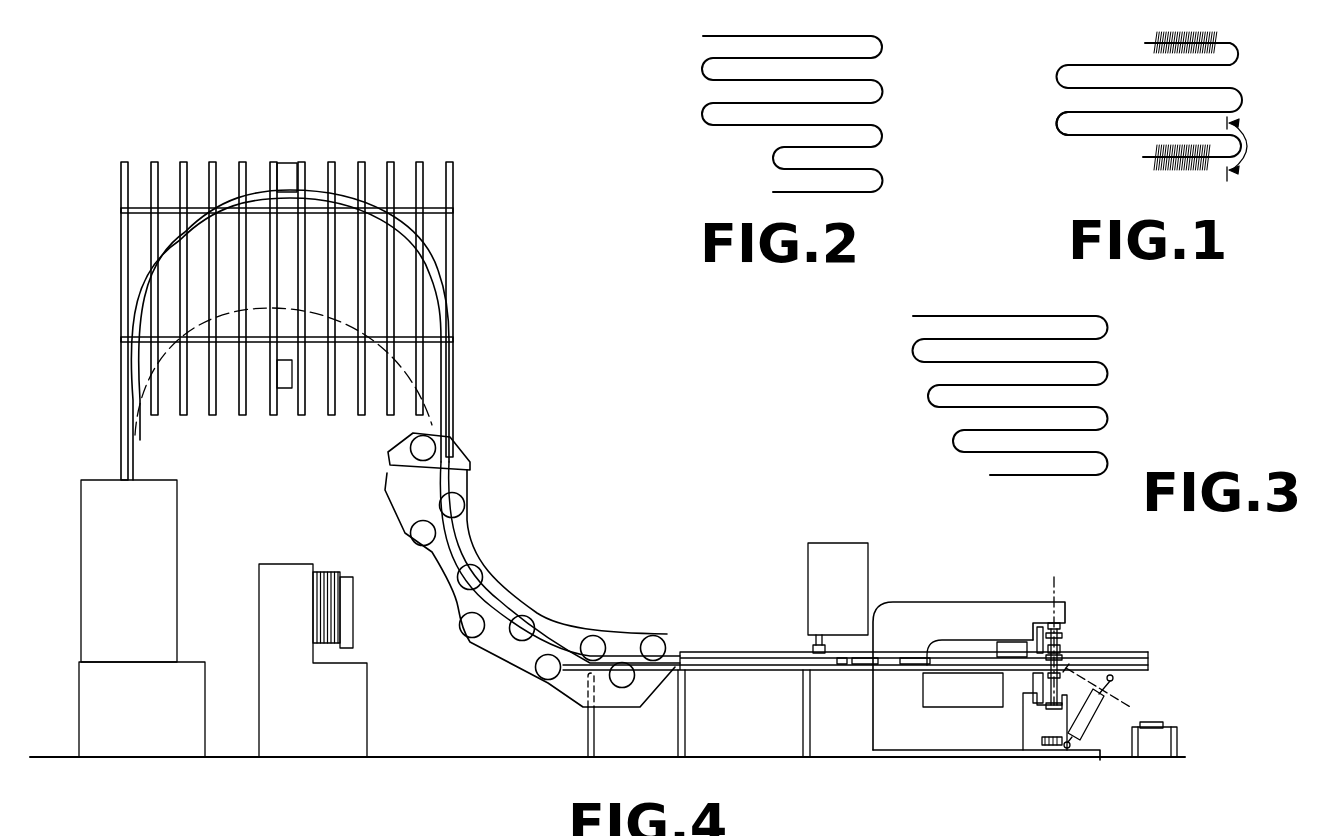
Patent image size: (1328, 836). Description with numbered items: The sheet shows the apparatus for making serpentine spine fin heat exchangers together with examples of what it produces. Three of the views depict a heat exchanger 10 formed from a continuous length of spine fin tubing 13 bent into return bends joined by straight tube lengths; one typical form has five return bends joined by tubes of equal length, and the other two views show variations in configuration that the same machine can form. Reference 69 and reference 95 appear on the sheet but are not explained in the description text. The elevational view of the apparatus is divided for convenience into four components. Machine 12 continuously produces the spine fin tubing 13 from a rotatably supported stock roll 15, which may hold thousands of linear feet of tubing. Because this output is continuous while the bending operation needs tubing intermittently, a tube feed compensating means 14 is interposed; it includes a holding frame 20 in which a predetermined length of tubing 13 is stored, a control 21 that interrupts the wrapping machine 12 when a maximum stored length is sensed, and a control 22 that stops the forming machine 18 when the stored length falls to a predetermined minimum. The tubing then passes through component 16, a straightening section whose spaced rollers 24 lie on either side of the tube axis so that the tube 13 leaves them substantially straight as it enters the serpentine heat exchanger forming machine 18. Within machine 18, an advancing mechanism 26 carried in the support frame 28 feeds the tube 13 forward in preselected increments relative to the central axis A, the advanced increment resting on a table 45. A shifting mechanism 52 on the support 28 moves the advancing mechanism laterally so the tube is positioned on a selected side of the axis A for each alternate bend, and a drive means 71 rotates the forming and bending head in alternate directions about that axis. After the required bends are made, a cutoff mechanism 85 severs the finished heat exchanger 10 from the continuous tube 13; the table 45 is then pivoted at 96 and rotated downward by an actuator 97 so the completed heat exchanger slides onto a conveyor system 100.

In FIG. 2, the heat exchanger 10 is at (884, 93).
In FIG. 1, the heat exchanger 10 is at (1074, 64).
In FIG. 3, the heat exchanger 10 is at (928, 405).
In FIG. 1, the spine fin tubing 13 is at (1062, 124).
In FIG. 4, the spine fin tubing 13 is at (448, 555).
In FIG. 1, the bend arc dimension 69 is at (1282, 166).
In FIG. 4, the spine fin forming machine 12 is at (135, 582).
In FIG. 4, the tube feed compensating means 14 is at (456, 283).
In FIG. 4, the stock roll 15 is at (321, 572).
In FIG. 4, the tube straightening component 16 is at (515, 585).
In FIG. 4, the serpentine heat exchanger forming machine 18 is at (905, 600).
In FIG. 4, the holding frame 20 is at (120, 328).
In FIG. 4, the control 21 is at (286, 163).
In FIG. 4, the control 22 is at (285, 388).
In FIG. 4, the spaced rollers 24 is at (508, 643).
In FIG. 4, the advancing mechanism 26 is at (952, 667).
In FIG. 4, the support structure or frame 28 is at (950, 612).
In FIG. 4, the table or support surface 45 is at (910, 665).
In FIG. 4, the shifting mechanism 52 is at (1015, 642).
In FIG. 4, the drive means 71 is at (1028, 719).
In FIG. 4, the cutoff mechanism 85 is at (1062, 648).
In FIG. 4, the table extension 95 is at (1148, 668).
In FIG. 4, the pivot 96 is at (1068, 675).
In FIG. 4, the actuator 97 is at (1091, 712).
In FIG. 4, the conveyor system 100 is at (1165, 722).
In FIG. 4, the central axis A is at (1060, 594).